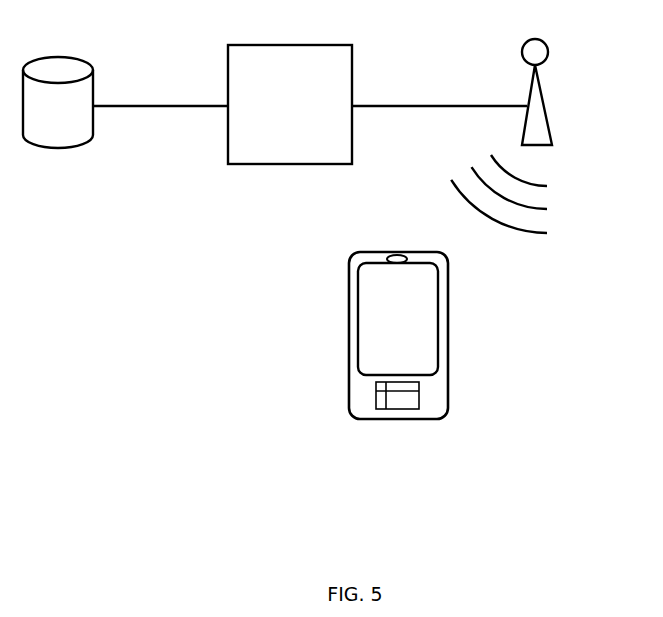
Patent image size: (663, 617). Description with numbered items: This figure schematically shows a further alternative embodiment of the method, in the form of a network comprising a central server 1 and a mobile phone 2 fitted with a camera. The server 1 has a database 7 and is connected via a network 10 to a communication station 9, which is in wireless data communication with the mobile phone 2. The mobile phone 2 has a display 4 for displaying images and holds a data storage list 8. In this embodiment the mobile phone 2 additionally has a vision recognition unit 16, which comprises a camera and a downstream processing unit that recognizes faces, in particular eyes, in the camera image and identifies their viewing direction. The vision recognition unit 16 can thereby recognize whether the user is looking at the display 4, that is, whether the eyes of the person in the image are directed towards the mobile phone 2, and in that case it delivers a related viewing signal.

The central server 1 is at (371, 52).
The mobile phone 2 is at (471, 292).
The display 4 is at (418, 337).
The database 7 is at (64, 133).
The data storage list 8 is at (407, 401).
The communication station 9 is at (566, 85).
The network 10 is at (426, 119).
The vision recognition unit 16 is at (394, 256).